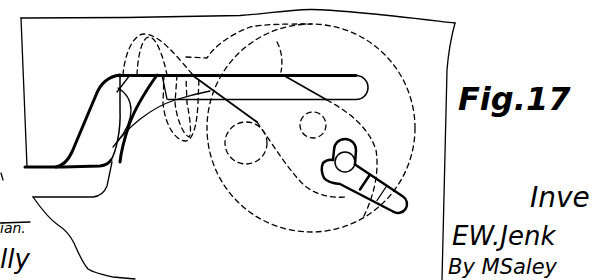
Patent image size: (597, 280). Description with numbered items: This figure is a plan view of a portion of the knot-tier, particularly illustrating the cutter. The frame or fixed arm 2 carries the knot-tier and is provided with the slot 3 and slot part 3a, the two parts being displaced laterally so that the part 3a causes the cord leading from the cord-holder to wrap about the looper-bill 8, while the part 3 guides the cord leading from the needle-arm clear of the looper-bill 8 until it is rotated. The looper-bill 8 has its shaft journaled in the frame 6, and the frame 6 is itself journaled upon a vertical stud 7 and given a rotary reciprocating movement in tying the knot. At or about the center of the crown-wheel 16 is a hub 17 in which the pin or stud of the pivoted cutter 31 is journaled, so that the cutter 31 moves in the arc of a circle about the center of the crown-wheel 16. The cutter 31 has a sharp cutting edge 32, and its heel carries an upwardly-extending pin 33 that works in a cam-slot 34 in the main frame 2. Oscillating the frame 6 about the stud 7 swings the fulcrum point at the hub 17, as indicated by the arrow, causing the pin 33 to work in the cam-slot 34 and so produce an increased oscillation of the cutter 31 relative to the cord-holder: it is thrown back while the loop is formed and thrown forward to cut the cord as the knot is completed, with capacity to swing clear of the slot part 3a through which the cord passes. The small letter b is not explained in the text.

The frame or fixed arm 2 is at (108, 235).
The slot 3 is at (68, 178).
The slot part 3a is at (243, 88).
The frame 6 is at (93, 121).
The vertical stud 7 is at (222, 138).
The looper-bill 8 is at (161, 118).
The crown-wheel 16 is at (250, 209).
The hub 17 is at (313, 160).
The cutter 31 is at (284, 130).
The cutting edge 32 is at (186, 57).
The pin 33 is at (344, 155).
The cam-slot 34 is at (372, 183).
The lug b is at (181, 106).